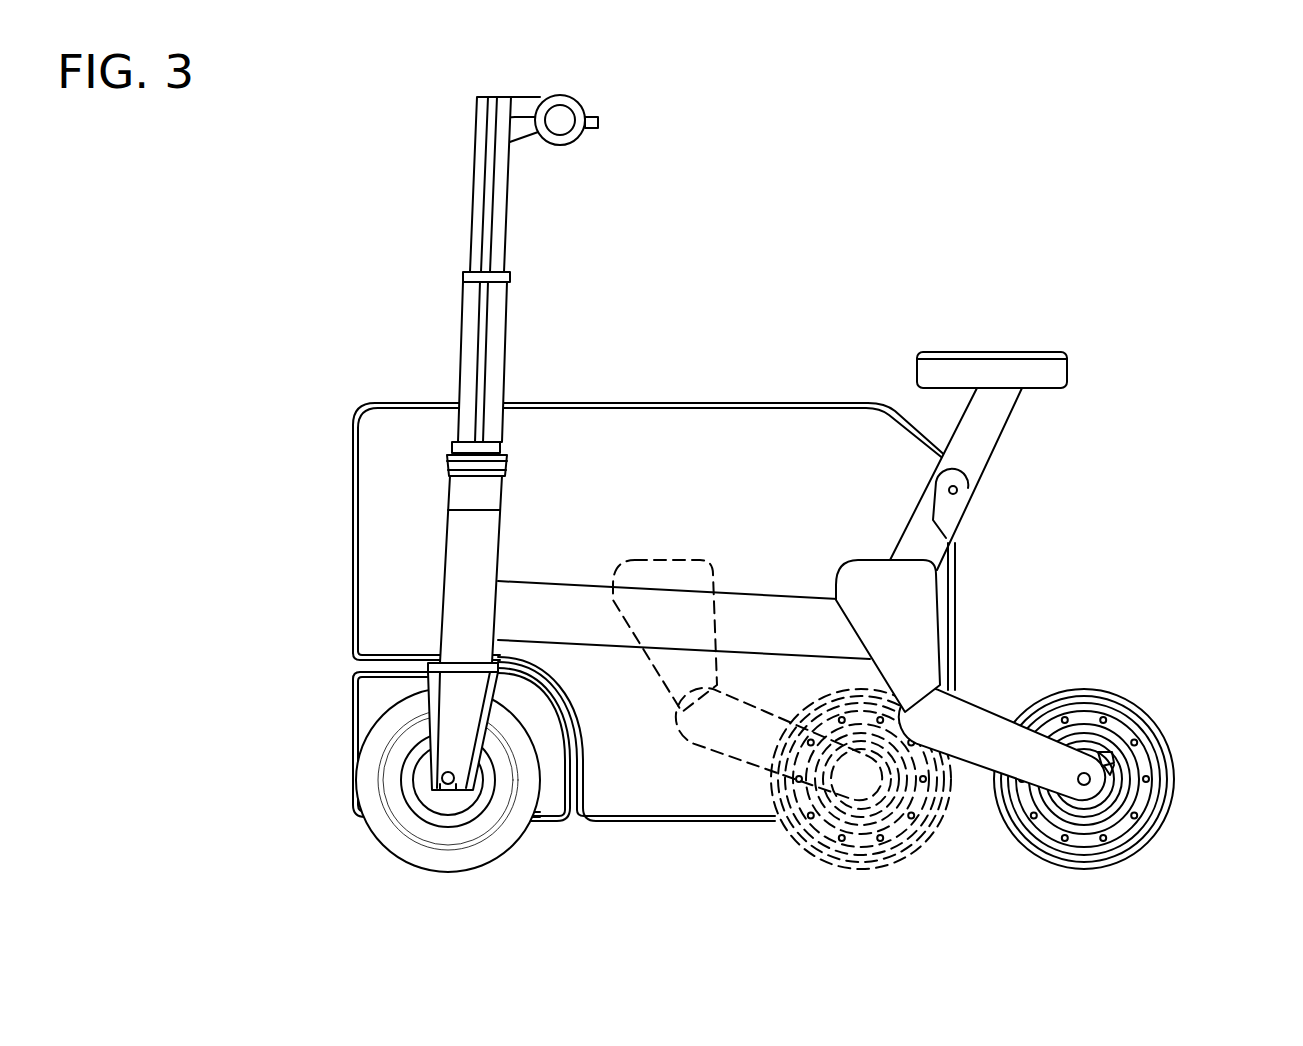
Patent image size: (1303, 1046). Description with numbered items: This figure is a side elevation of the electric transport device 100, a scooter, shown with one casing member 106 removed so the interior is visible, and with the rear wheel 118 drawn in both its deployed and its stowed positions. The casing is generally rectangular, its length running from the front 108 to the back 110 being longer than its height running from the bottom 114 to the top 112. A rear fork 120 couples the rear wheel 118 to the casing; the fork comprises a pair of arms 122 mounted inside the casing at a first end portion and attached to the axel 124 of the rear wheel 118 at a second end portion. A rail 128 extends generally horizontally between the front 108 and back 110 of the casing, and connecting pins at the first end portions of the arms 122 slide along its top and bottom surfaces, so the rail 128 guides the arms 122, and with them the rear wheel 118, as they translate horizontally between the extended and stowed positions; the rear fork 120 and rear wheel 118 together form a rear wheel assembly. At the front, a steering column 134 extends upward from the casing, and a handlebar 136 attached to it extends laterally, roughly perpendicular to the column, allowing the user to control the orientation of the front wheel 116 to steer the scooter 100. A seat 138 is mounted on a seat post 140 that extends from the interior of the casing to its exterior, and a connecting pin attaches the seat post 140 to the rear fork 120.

The electric transport device 100 is at (1172, 125).
The second casing member 106 is at (595, 616).
The front 108 is at (346, 505).
The back 110 is at (957, 580).
The top 112 is at (762, 402).
The bottom 114 is at (628, 813).
The front wheel 116 is at (402, 843).
The rear wheel 118 is at (1123, 848).
The rear fork 120 is at (955, 665).
The arms 122 is at (970, 768).
The axel 124 is at (1108, 785).
The rail 128 is at (562, 600).
The steering column 134 is at (478, 218).
The handlebar 136 is at (573, 103).
The seat 138 is at (1015, 351).
The seat post 140 is at (987, 433).